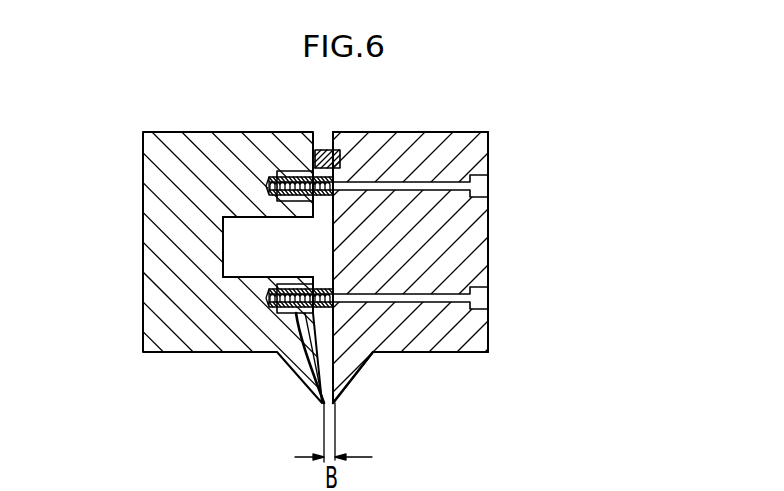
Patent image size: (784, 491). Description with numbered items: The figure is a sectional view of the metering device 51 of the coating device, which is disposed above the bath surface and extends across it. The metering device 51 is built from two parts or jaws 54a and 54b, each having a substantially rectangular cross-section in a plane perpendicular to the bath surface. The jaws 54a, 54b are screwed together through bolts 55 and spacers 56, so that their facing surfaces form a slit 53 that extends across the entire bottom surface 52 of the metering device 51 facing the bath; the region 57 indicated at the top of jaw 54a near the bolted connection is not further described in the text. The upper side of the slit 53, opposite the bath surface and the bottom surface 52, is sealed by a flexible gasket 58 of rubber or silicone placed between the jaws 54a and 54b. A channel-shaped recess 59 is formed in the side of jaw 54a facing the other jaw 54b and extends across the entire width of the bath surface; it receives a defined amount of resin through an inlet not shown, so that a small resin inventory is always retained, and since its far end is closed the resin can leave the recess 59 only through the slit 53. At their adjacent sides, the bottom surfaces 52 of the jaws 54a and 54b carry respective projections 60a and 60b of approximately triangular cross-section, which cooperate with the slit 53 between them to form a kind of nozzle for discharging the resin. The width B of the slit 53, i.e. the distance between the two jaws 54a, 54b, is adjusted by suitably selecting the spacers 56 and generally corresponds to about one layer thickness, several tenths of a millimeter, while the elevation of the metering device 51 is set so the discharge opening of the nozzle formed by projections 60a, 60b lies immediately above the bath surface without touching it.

The metering device 51 is at (463, 116).
The bottom surface 52 is at (428, 353).
The slit 53 is at (330, 403).
The jaw 54a is at (143, 238).
The jaw 54b is at (490, 218).
The bolts 55 is at (480, 185).
The spacers 56 is at (346, 176).
The threaded insert 57 is at (288, 131).
The flexible gasket 58 is at (323, 149).
The channel-shaped recess 59 is at (293, 261).
The projection 60a is at (315, 380).
The projection 60b is at (348, 375).